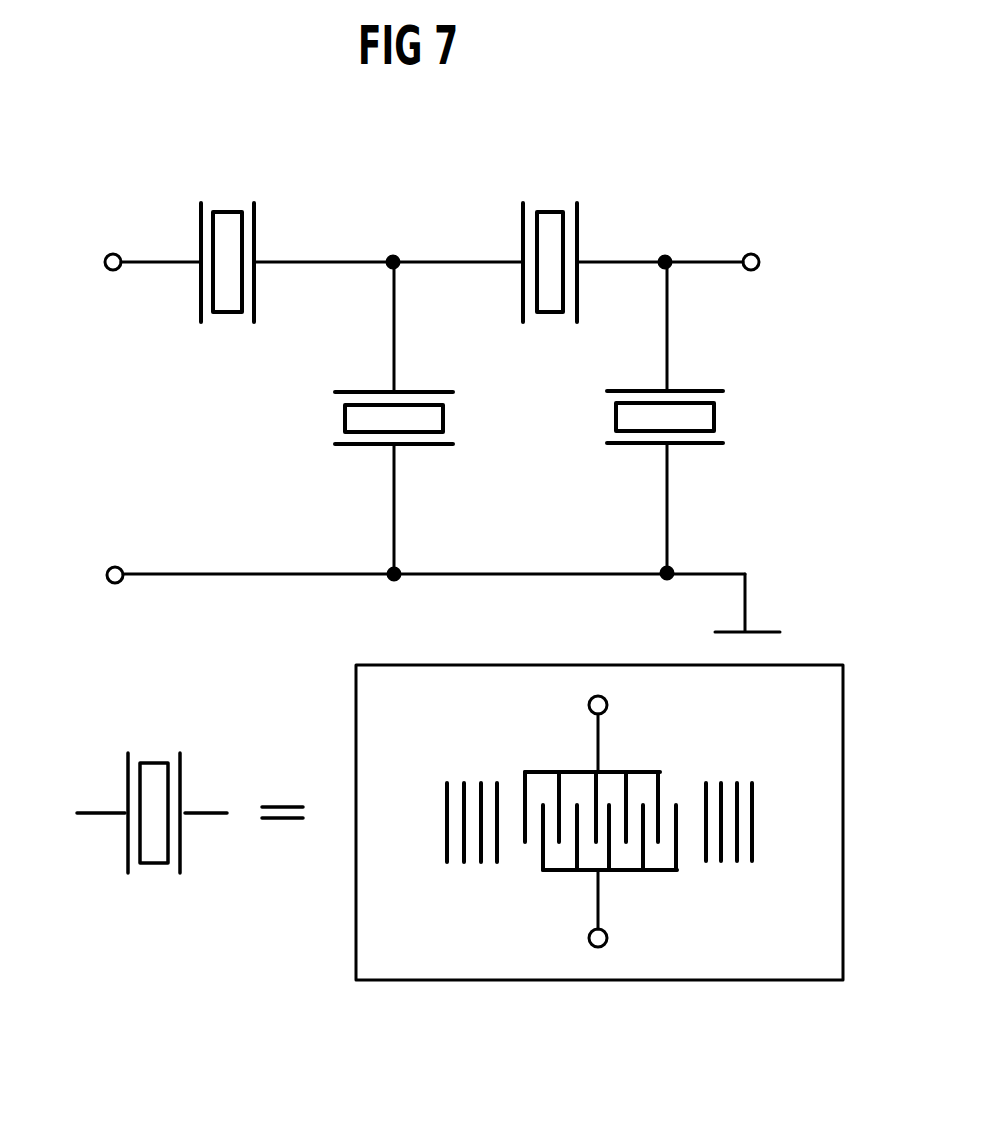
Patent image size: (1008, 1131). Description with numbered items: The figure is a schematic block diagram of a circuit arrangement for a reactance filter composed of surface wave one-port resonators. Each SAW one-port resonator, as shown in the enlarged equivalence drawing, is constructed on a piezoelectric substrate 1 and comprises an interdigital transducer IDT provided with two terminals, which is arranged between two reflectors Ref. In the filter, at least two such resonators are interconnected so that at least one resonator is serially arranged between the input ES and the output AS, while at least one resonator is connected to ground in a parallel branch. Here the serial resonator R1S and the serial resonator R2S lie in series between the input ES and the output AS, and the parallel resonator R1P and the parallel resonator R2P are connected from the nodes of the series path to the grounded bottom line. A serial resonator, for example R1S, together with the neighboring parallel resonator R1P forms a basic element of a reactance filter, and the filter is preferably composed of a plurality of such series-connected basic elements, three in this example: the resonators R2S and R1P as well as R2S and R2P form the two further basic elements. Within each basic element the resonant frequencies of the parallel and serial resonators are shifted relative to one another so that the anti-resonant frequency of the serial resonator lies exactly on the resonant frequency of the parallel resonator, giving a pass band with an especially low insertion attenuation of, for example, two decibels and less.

The input ES is at (104, 262).
The output AS is at (759, 262).
The serial resonator R1S is at (228, 212).
The serial resonator R2S is at (550, 212).
The parallel resonator R1P is at (345, 417).
The parallel resonator R2P is at (714, 415).
The piezoelectric substrate 1 is at (827, 717).
The reflector Ref is at (475, 862).
The interdigital transducer IDT is at (627, 870).